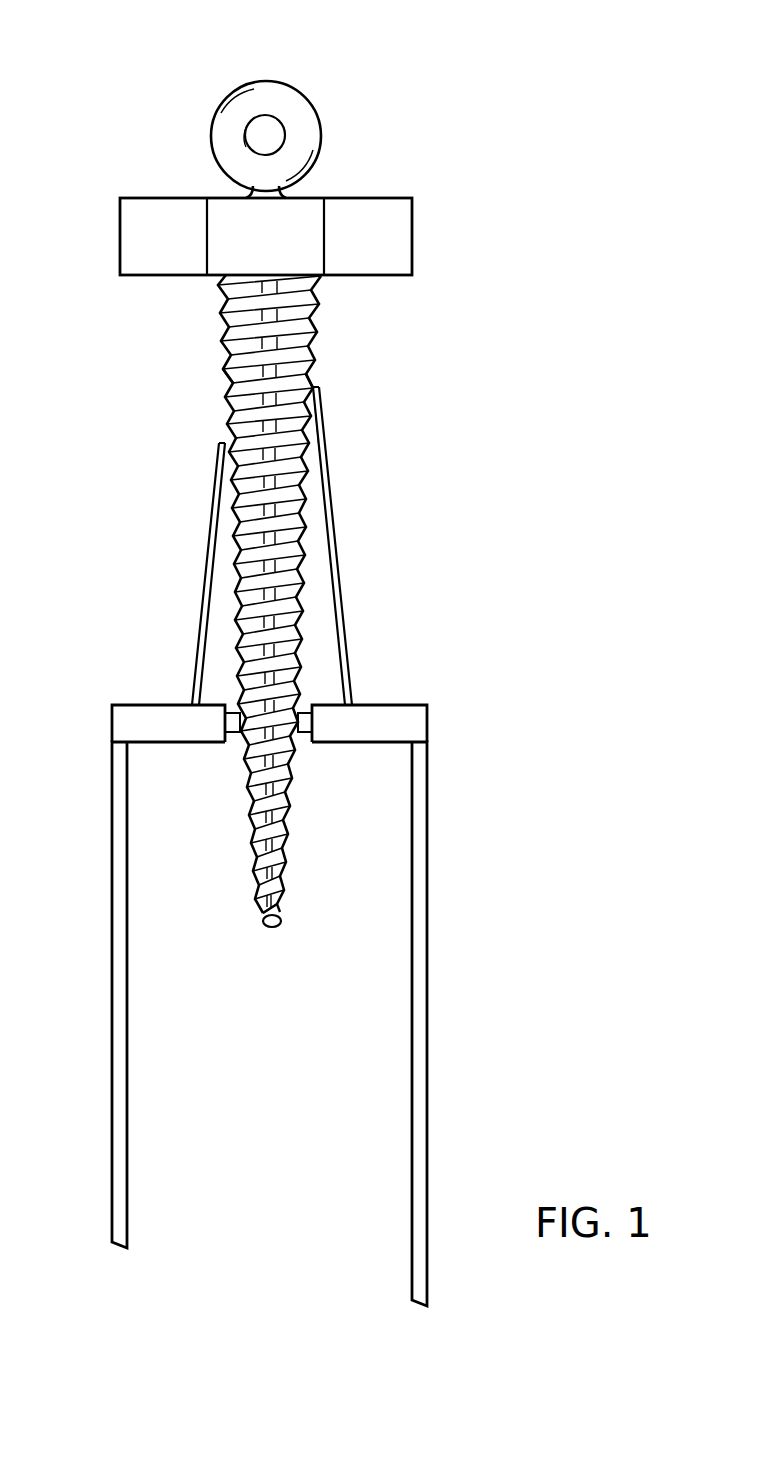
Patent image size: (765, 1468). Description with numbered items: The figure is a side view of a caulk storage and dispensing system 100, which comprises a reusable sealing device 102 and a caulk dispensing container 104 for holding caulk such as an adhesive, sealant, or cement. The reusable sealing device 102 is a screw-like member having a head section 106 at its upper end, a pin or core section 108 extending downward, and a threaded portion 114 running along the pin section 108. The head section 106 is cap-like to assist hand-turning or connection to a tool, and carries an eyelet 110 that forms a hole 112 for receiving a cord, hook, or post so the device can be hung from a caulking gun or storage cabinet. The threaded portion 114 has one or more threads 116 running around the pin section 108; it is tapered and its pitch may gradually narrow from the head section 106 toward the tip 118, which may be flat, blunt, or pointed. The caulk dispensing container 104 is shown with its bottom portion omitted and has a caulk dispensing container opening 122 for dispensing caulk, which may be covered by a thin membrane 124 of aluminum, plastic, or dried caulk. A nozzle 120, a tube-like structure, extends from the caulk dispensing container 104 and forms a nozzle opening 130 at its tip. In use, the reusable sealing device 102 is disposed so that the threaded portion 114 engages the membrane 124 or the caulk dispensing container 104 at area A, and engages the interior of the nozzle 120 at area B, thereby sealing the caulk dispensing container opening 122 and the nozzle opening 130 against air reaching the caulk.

The caulk storage and dispensing system 100 is at (606, 103).
The reusable sealing device 102 is at (160, 318).
The caulk dispensing container 104 is at (112, 822).
The head section 106 is at (412, 236).
The pin section 108 is at (307, 345).
The eyelet 110 is at (265, 81).
The hole 112 is at (268, 128).
The threaded portion 114 is at (222, 373).
The threads 116 is at (296, 378).
The tip 118 is at (275, 928).
The nozzle 120 is at (335, 608).
The caulk dispensing container opening 122 is at (233, 749).
The membrane 124 is at (303, 732).
The nozzle opening 130 is at (310, 449).